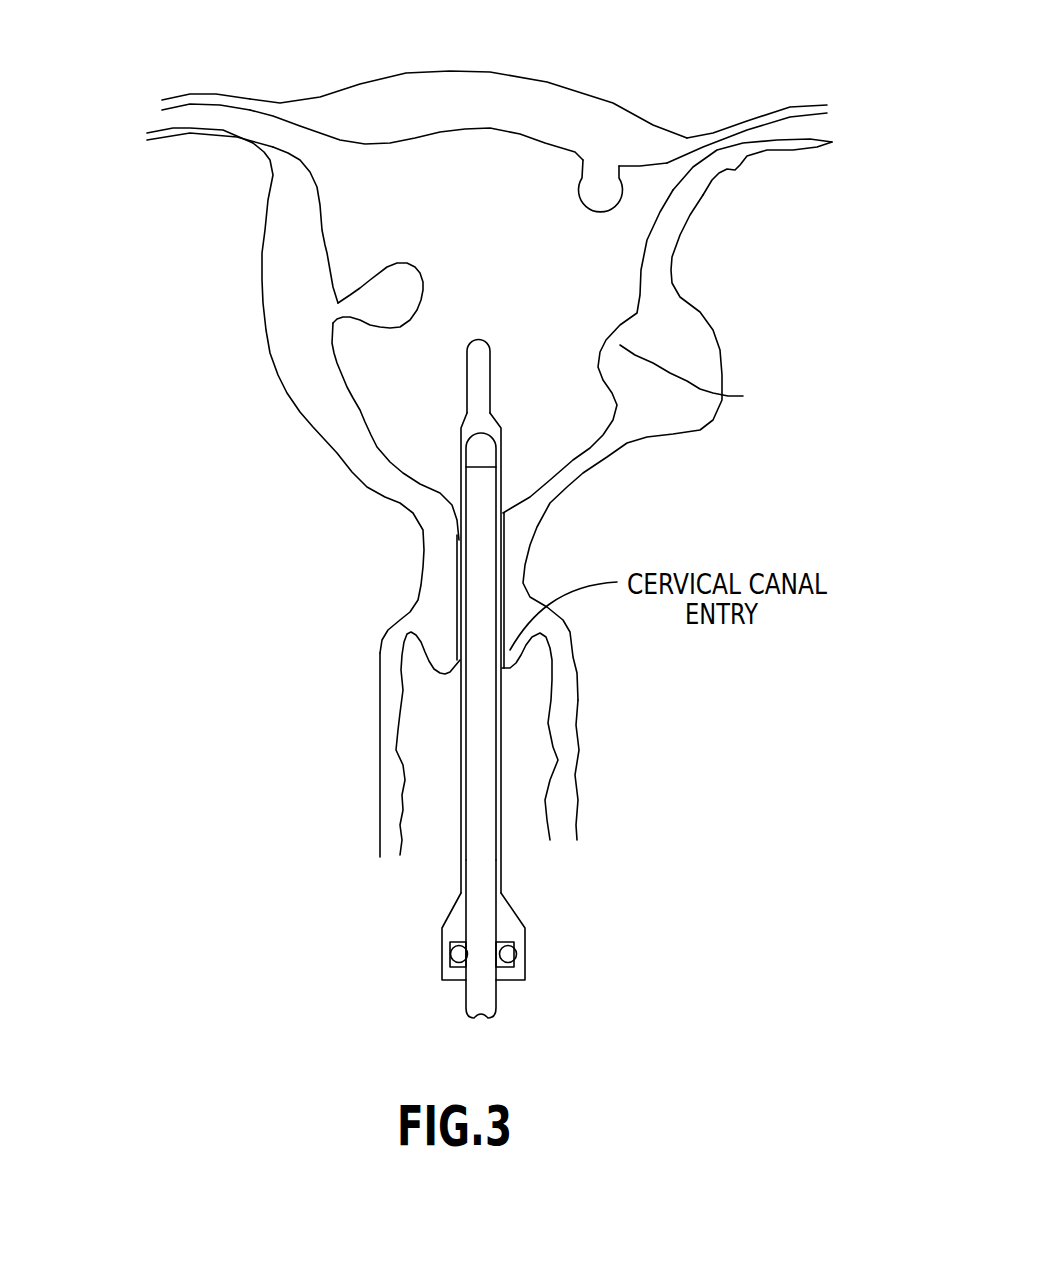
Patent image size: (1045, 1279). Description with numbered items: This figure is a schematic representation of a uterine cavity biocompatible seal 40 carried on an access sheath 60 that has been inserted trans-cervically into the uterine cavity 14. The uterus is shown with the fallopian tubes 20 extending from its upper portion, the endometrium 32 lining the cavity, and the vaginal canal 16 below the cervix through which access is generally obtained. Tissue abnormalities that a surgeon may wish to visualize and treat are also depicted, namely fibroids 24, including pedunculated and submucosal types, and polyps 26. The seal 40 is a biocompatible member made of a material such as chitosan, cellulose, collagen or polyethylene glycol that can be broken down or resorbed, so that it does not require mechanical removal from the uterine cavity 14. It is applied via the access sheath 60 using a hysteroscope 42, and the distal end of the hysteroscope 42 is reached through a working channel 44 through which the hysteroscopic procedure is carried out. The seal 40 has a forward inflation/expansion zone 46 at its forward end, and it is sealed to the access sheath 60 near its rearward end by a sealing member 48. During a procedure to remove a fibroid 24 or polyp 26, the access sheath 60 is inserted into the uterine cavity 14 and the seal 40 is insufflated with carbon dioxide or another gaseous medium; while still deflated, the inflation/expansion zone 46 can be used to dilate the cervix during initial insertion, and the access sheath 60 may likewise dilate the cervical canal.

The uterine cavity 14 is at (487, 173).
The vaginal canal 16 is at (425, 728).
The fallopian tubes 20 is at (735, 182).
The fibroids 24 is at (602, 190).
The polyps 26 is at (395, 298).
The endometrium 32 is at (367, 451).
The uterine cavity biocompatible seal 40 is at (455, 378).
The hysteroscope 42 is at (483, 802).
The working channel 44 is at (483, 872).
The forward inflation/expansion zone 46 is at (505, 325).
The sealing member 48 is at (450, 956).
The access sheath 60 is at (497, 514).